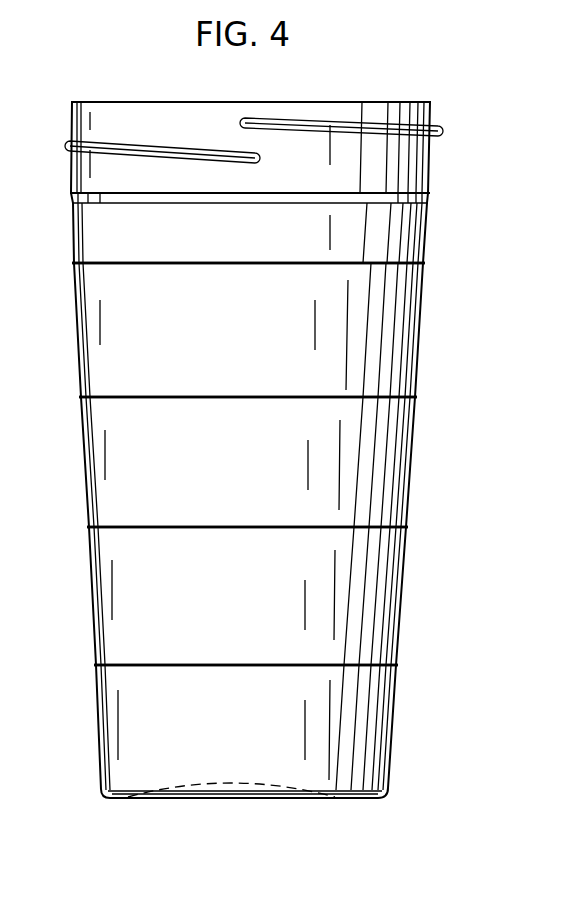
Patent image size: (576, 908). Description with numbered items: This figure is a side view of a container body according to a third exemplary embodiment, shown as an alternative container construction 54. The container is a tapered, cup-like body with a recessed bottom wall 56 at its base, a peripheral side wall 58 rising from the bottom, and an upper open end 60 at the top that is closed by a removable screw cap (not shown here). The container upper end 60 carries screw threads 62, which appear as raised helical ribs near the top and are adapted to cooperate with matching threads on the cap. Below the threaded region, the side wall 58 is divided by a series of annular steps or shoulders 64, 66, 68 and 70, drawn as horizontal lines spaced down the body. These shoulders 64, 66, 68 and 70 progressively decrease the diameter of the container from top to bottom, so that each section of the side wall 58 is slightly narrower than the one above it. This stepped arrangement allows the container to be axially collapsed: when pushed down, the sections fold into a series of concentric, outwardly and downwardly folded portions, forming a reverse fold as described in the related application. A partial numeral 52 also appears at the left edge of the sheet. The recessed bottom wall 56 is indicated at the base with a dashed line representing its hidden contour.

The cup 52 is at (5, 471).
The container construction 54 is at (46, 164).
The recessed bottom wall 56 is at (220, 800).
The peripheral side wall 58 is at (422, 368).
The upper open end 60 is at (408, 102).
The screw threads 62 is at (160, 146).
The annular step or shoulder 64 is at (74, 266).
The annular step or shoulder 66 is at (82, 398).
The annular step or shoulder 68 is at (90, 528).
The annular step or shoulder 70 is at (96, 666).